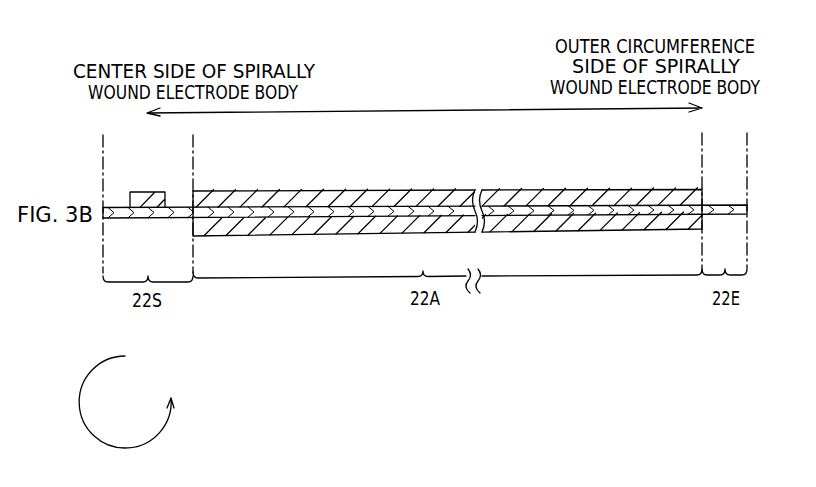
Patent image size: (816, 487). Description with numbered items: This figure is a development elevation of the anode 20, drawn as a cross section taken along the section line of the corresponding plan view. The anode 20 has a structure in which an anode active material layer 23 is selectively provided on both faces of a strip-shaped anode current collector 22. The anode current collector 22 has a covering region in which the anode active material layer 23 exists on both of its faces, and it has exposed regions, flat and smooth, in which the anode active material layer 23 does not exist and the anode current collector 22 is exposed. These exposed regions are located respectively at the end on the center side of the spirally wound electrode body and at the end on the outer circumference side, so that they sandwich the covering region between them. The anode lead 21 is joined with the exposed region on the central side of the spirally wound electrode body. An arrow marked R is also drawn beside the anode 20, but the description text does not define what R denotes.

The positive electrode 20 is at (429, 79).
The positive electrode lead 21 is at (145, 205).
The positive electrode current collector 22 is at (401, 207).
The positive electrode active material layer 23 is at (520, 222).
The winding direction R is at (166, 428).